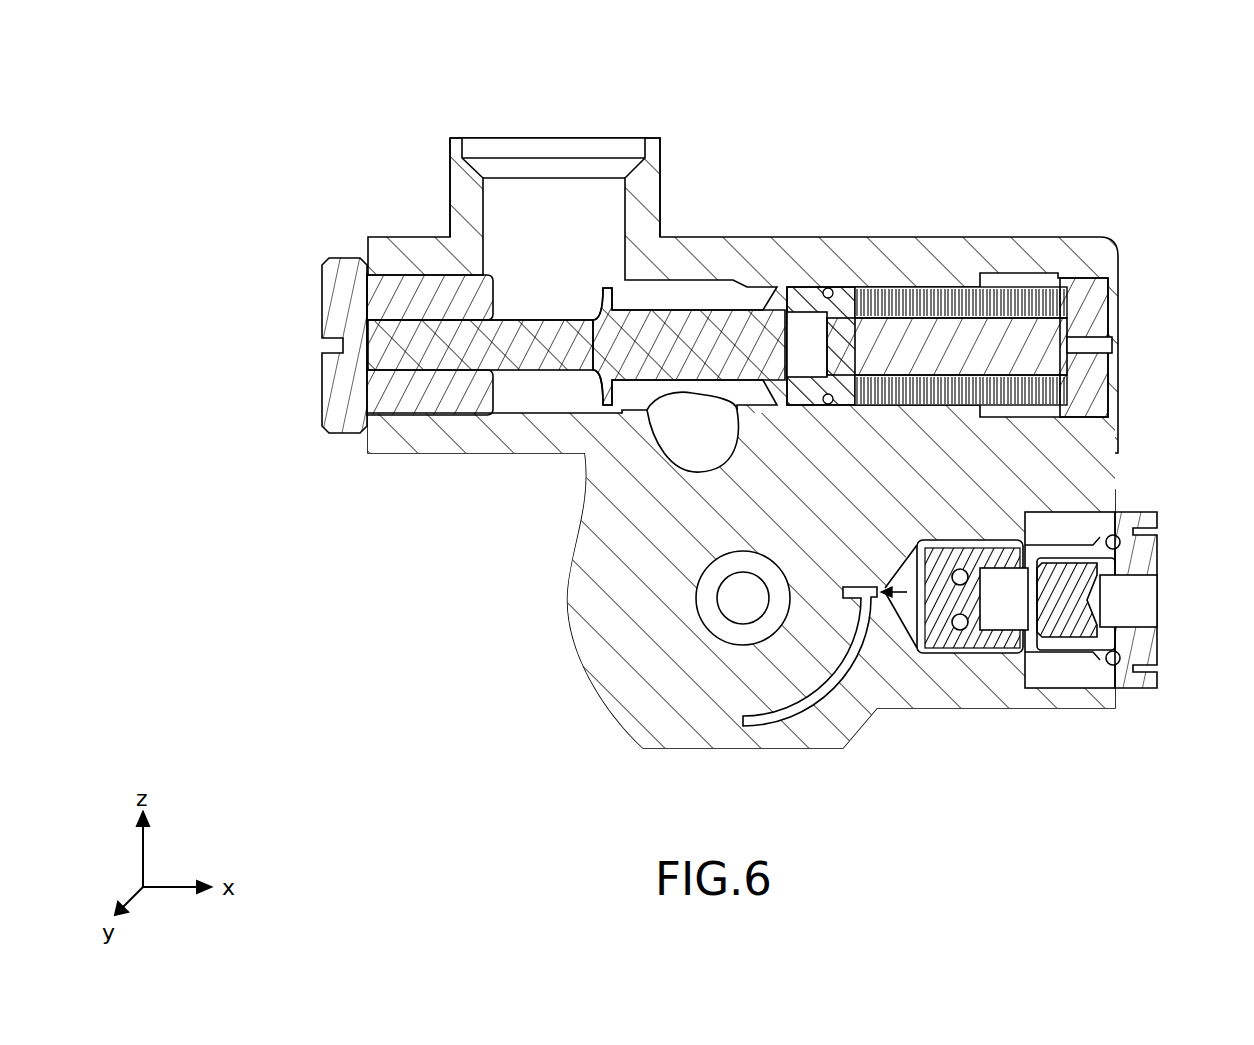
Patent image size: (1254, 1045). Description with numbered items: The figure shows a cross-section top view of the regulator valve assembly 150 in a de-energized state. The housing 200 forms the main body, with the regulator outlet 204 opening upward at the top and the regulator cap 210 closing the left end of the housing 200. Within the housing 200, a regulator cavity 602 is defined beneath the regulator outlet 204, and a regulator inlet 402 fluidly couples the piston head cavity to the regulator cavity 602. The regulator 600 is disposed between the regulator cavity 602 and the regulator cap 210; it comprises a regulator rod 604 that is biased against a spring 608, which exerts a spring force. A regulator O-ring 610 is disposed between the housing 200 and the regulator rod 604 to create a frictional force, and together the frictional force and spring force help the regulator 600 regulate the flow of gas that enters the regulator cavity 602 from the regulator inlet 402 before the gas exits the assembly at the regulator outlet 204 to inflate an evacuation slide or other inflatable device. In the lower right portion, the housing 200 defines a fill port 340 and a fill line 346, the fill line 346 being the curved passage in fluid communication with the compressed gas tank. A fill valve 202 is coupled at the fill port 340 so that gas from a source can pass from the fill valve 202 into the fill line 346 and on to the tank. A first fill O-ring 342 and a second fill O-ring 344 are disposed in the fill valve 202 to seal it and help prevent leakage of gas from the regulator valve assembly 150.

The regulator valve assembly 150 is at (774, 422).
The housing 200 is at (749, 404).
The fill valve 202 is at (1160, 540).
The regulator outlet 204 is at (623, 140).
The regulator cap 210 is at (348, 413).
The fill port 340 is at (956, 667).
The first fill O-ring 342 is at (960, 630).
The second fill O-ring 344 is at (1113, 667).
The fill line 346 is at (815, 708).
The regulator inlet 402 is at (672, 437).
The regulator 600 is at (852, 276).
The regulator cavity 602 is at (572, 229).
The regulator rod 604 is at (688, 318).
The spring 608 is at (985, 300).
The regulator O-ring 610 is at (828, 288).